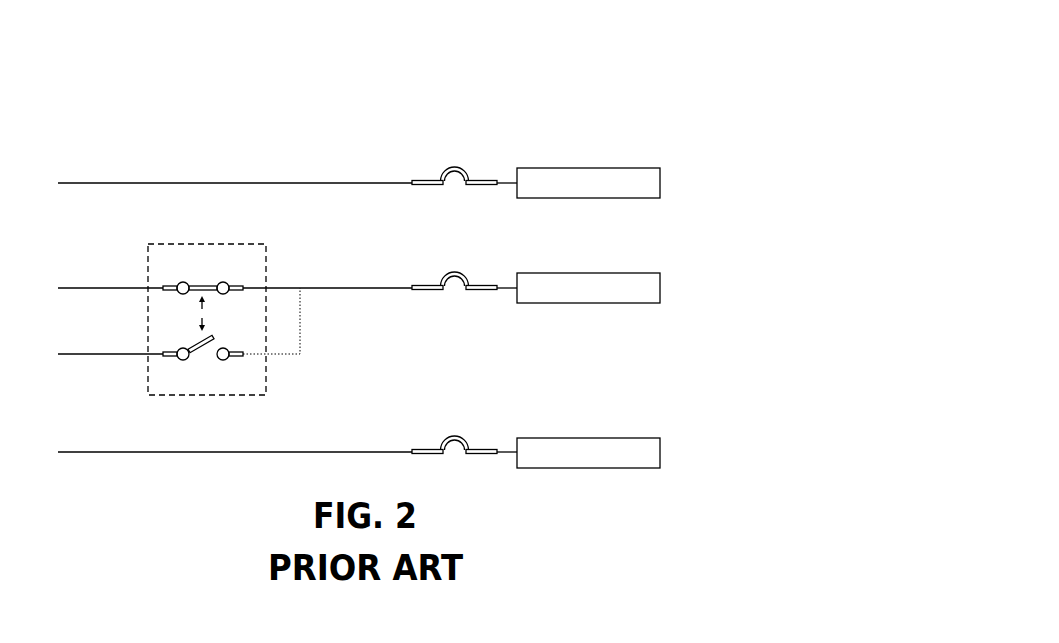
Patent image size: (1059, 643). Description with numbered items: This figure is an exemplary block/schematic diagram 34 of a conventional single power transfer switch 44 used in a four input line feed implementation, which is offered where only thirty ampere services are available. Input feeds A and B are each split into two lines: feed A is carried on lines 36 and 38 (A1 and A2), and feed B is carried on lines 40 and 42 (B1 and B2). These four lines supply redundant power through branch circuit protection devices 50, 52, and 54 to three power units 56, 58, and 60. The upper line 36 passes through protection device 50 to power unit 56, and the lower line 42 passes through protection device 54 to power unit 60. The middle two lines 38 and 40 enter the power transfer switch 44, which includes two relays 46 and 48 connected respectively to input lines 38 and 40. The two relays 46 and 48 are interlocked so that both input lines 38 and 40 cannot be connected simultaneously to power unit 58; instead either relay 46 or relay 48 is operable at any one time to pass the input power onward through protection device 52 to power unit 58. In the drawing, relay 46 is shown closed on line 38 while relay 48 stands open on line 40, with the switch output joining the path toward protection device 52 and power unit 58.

The block/schematic diagram 34 is at (705, 93).
The input feed line A1 36 is at (72, 183).
The input feed line A2 38 is at (72, 288).
The input feed line B1 40 is at (72, 354).
The input feed line B2 42 is at (72, 452).
The power transfer switch 44 is at (224, 303).
The relay 46 is at (188, 282).
The relay 48 is at (197, 336).
The branch circuit protection device 50 is at (461, 168).
The branch circuit protection device 52 is at (461, 273).
The branch circuit protection device 54 is at (461, 437).
The power unit 56 is at (660, 185).
The power unit 58 is at (660, 290).
The power unit 60 is at (660, 454).